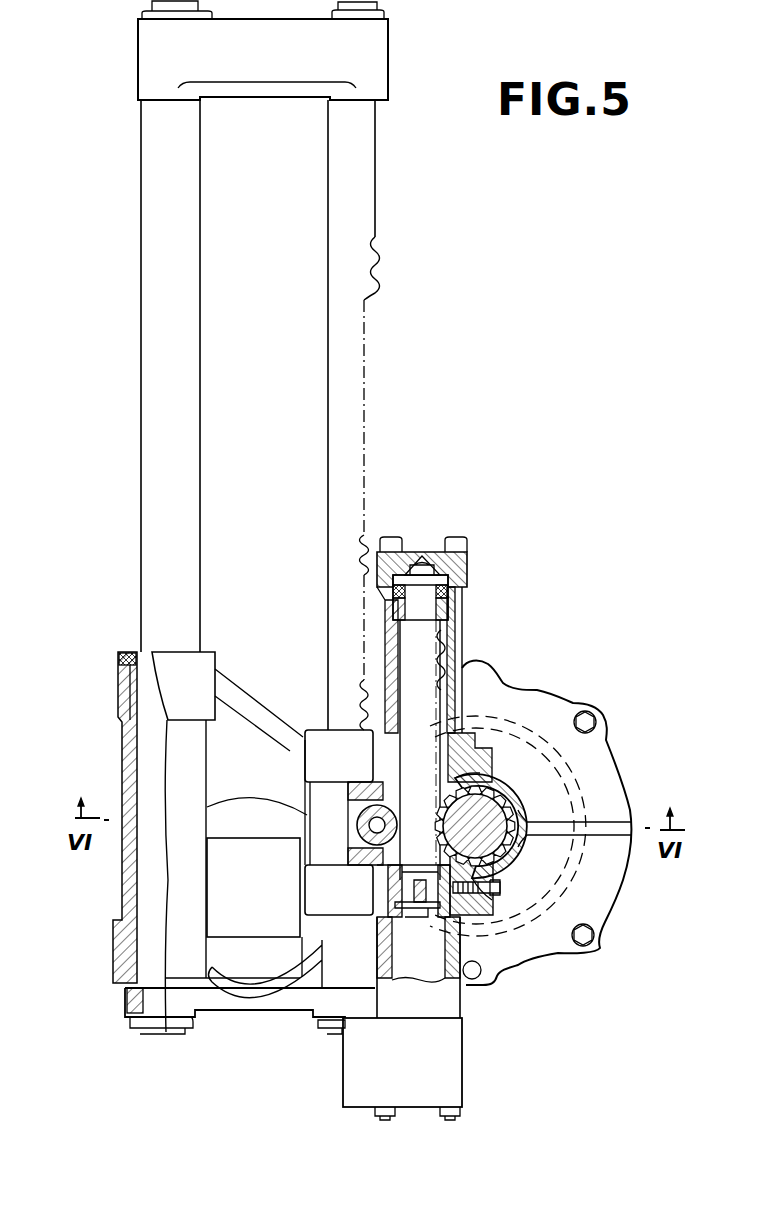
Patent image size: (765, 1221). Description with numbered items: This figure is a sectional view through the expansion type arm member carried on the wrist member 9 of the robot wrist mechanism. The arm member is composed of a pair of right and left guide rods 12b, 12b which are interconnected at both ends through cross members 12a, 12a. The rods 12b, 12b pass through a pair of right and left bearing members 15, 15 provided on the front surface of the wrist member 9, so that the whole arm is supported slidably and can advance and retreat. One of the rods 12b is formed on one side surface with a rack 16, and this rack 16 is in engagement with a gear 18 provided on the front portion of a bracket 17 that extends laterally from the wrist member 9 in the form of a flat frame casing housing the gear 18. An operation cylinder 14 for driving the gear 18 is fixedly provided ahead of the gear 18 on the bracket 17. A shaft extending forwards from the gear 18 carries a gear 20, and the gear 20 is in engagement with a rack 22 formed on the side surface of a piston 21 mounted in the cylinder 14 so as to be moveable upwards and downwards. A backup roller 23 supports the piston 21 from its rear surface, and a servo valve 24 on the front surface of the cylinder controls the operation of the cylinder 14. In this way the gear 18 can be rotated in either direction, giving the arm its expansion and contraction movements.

The wrist member 9 is at (414, 509).
The cross members 12a is at (270, 86).
The guide rods 12b is at (141, 243).
The operation cylinder 14 is at (440, 1001).
The bearing members 15 is at (316, 735).
The rack 16 is at (378, 287).
The bracket 17 is at (535, 688).
The gear 18 is at (548, 736).
The gear 20 is at (497, 802).
The piston 21 is at (440, 628).
The rack 22 is at (445, 670).
The backup roller 23 is at (357, 823).
The servo valve 24 is at (462, 1088).